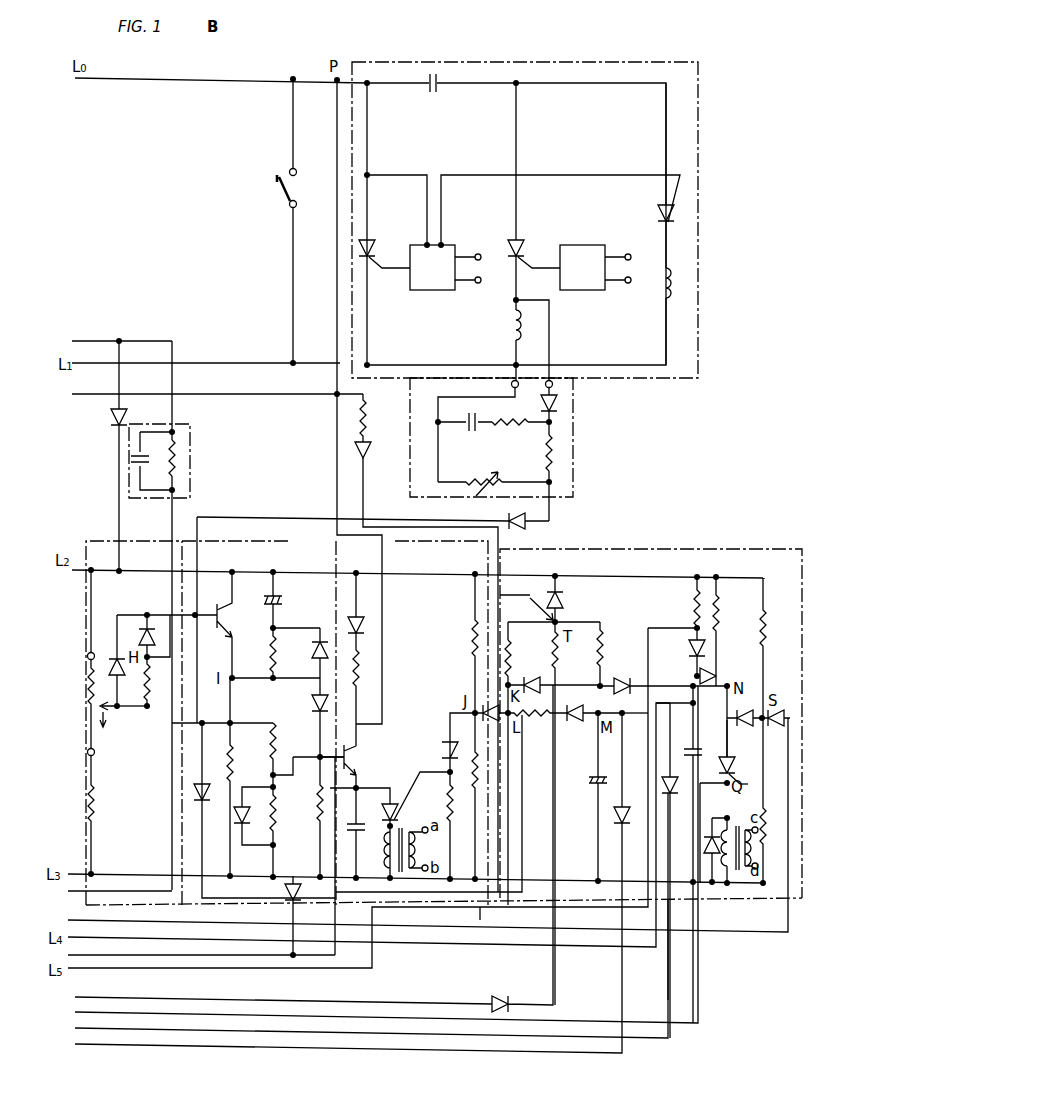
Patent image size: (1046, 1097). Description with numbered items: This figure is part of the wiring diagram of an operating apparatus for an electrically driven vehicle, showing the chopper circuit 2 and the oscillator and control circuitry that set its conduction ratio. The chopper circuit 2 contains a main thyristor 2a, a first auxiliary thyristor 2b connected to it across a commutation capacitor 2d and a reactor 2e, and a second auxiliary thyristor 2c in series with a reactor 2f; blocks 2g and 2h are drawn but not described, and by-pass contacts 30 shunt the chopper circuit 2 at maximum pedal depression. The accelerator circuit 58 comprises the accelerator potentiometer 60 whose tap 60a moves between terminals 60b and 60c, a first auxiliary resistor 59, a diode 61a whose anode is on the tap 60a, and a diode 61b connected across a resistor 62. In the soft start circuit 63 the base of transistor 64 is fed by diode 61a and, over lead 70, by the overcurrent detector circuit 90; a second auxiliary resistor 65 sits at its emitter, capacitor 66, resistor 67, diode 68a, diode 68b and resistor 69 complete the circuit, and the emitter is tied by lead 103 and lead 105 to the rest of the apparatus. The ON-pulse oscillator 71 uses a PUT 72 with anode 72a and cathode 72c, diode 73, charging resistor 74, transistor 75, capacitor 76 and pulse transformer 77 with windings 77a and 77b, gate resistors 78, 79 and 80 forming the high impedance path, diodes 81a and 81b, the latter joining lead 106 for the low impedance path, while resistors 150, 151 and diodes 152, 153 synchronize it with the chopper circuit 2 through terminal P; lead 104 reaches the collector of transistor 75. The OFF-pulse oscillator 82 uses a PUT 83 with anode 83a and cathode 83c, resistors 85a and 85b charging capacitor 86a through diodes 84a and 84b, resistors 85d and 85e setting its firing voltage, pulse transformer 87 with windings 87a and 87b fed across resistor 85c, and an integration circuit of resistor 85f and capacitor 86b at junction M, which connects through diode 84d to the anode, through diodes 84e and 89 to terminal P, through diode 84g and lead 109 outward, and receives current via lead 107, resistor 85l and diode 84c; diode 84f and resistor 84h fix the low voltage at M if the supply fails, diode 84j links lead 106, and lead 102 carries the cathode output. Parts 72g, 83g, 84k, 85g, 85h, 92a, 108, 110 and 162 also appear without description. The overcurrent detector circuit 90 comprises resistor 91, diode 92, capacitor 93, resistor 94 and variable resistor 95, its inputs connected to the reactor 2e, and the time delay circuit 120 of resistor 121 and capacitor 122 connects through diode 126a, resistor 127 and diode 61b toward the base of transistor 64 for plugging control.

The chopper circuit 2 is at (708, 112).
The main thyristor 2a is at (376, 240).
The first auxiliary thyristor 2b is at (523, 244).
The second auxiliary thyristor 2c is at (660, 214).
The commutation capacitor 2d is at (433, 92).
The reactor 2e is at (510, 339).
The reactor 2f is at (665, 302).
The relay block 2g is at (428, 290).
The relay block 2h is at (582, 290).
The by-pass contacts 30 is at (297, 170).
The accelerator circuit 58 is at (96, 538).
The first auxiliary resistor 59 is at (94, 815).
The accelerator potentiometer 60 is at (88, 679).
The tap 60a is at (104, 725).
The terminal 60b is at (93, 652).
The terminal 60c is at (94, 747).
The diode 61a is at (116, 699).
The diode 61b is at (142, 622).
The resistor 62 is at (149, 682).
The soft start circuit 63 is at (297, 534).
The transistor 64 is at (225, 616).
The second auxiliary resistor 65 is at (204, 773).
The capacitor 66 is at (282, 598).
The resistor 67 is at (270, 655).
The diode 68a is at (312, 652).
The diode 68b is at (312, 701).
The resistor 69 is at (317, 821).
The lead 70 is at (260, 516).
The ON-pulse oscillator 71 is at (393, 536).
The programmable unijunction transistor 72 is at (397, 801).
The anode 72a is at (390, 783).
The cathode 72c is at (390, 804).
The diode 72g is at (440, 744).
The diode 73 is at (364, 625).
The charging resistor 74 is at (362, 665).
The transistor 75 is at (351, 751).
The capacitor 76 is at (366, 824).
The pulse transformer 77 is at (399, 875).
The primary winding 77a is at (390, 868).
The secondary winding 77b is at (418, 868).
The gate resistor 78 is at (472, 655).
The gate resistor 79 is at (478, 780).
The gate resistor 80 is at (450, 820).
The diode 81a is at (448, 713).
The diode 81b is at (490, 708).
The OFF-pulse oscillator 82 is at (702, 547).
The programmable unijunction transistor 83 is at (743, 784).
The anode 83a is at (730, 716).
The cathode 83c is at (656, 804).
The gate 83g is at (740, 765).
The diode 84a is at (718, 670).
The diode 84b is at (692, 654).
The diode 84c is at (565, 599).
The diode 84d is at (621, 678).
The diode 84e is at (529, 676).
The diode 84f is at (575, 717).
The diode 84g is at (618, 818).
The resistor 84h is at (628, 698).
The diode 84j is at (727, 734).
The diode 84k is at (762, 710).
The resistor 85a is at (718, 612).
The resistor 85b is at (692, 604).
The resistor 85c is at (686, 914).
The resistor 85d is at (768, 626).
The resistor 85e is at (767, 820).
The resistor 85f is at (600, 650).
The resistor 85g is at (508, 640).
The resistor 85h is at (532, 717).
The resistor 85l is at (562, 690).
The capacitor 86a is at (672, 708).
The capacitor 86b is at (592, 782).
The pulse transformer 87 is at (735, 886).
The diode 87a is at (710, 886).
The secondary winding 87b is at (748, 868).
The diode 89 is at (366, 444).
The overcurrent detector circuit 90 is at (586, 422).
The resistor 91 is at (556, 474).
The diode 92 is at (562, 395).
The diode 92a is at (527, 521).
The capacitor 93 is at (472, 431).
The resistor 94 is at (505, 410).
The variable resistor 95 is at (484, 481).
The lead 102 is at (716, 997).
The lead 103 is at (108, 893).
The lead 104 is at (186, 957).
The lead 105 is at (480, 921).
The lead 106 is at (784, 945).
The lead 107 is at (570, 981).
The line 108 is at (688, 1044).
The lead 109 is at (631, 998).
The line 110 is at (275, 410).
The time delay circuit 120 is at (192, 430).
The resistor 121 is at (173, 478).
The capacitor 122 is at (143, 467).
The diode 126a is at (112, 420).
The resistor 127 is at (95, 338).
The resistor 150 is at (269, 725).
The resistor 151 is at (277, 790).
The diode 152 is at (238, 816).
The diode 153 is at (284, 891).
The terminal point 162 is at (526, 598).